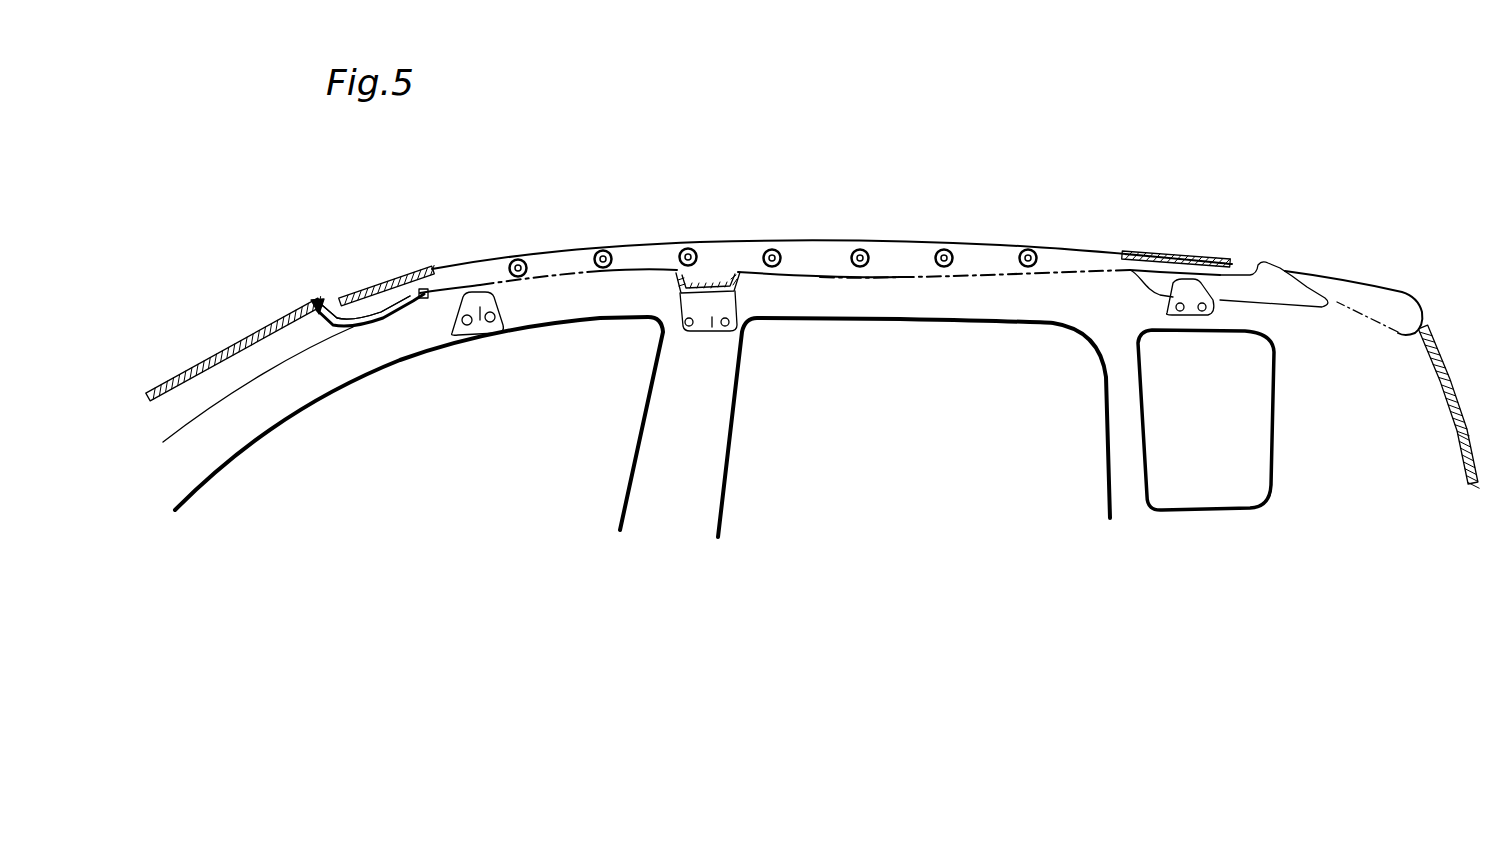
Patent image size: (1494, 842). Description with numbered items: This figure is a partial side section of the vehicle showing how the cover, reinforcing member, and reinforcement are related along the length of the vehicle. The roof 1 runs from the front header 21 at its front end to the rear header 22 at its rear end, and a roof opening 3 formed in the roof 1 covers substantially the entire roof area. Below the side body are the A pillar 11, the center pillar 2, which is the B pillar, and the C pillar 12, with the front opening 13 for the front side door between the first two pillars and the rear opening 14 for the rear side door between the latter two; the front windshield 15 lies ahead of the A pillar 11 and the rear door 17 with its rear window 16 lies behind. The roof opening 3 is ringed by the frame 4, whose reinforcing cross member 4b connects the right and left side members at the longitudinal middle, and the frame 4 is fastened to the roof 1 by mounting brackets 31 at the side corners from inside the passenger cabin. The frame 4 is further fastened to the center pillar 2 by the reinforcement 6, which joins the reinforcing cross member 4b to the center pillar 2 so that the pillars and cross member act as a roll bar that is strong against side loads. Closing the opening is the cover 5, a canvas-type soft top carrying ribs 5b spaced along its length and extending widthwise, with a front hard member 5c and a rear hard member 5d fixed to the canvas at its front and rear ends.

The vehicle roof 1 is at (387, 323).
The front header 21 is at (366, 307).
The center pillar 2 is at (713, 427).
The roof opening 3 is at (425, 300).
The frame 4 is at (880, 277).
The reinforcing cross member 4b is at (742, 285).
The cover 5 is at (652, 243).
The ribs 5b is at (598, 255).
The front hard member 5c is at (368, 292).
The rear hard member 5d is at (1176, 254).
The reinforcement 6 is at (712, 323).
The A pillar 11 is at (238, 452).
The C pillar 12 is at (1118, 432).
The front opening 13 is at (527, 483).
The rear opening 14 is at (947, 489).
The front windshield 15 is at (220, 356).
The rear window 16 is at (1400, 292).
The rear door 17 is at (1455, 370).
The rear header 22 is at (1266, 270).
The mounting brackets 31 is at (482, 321).